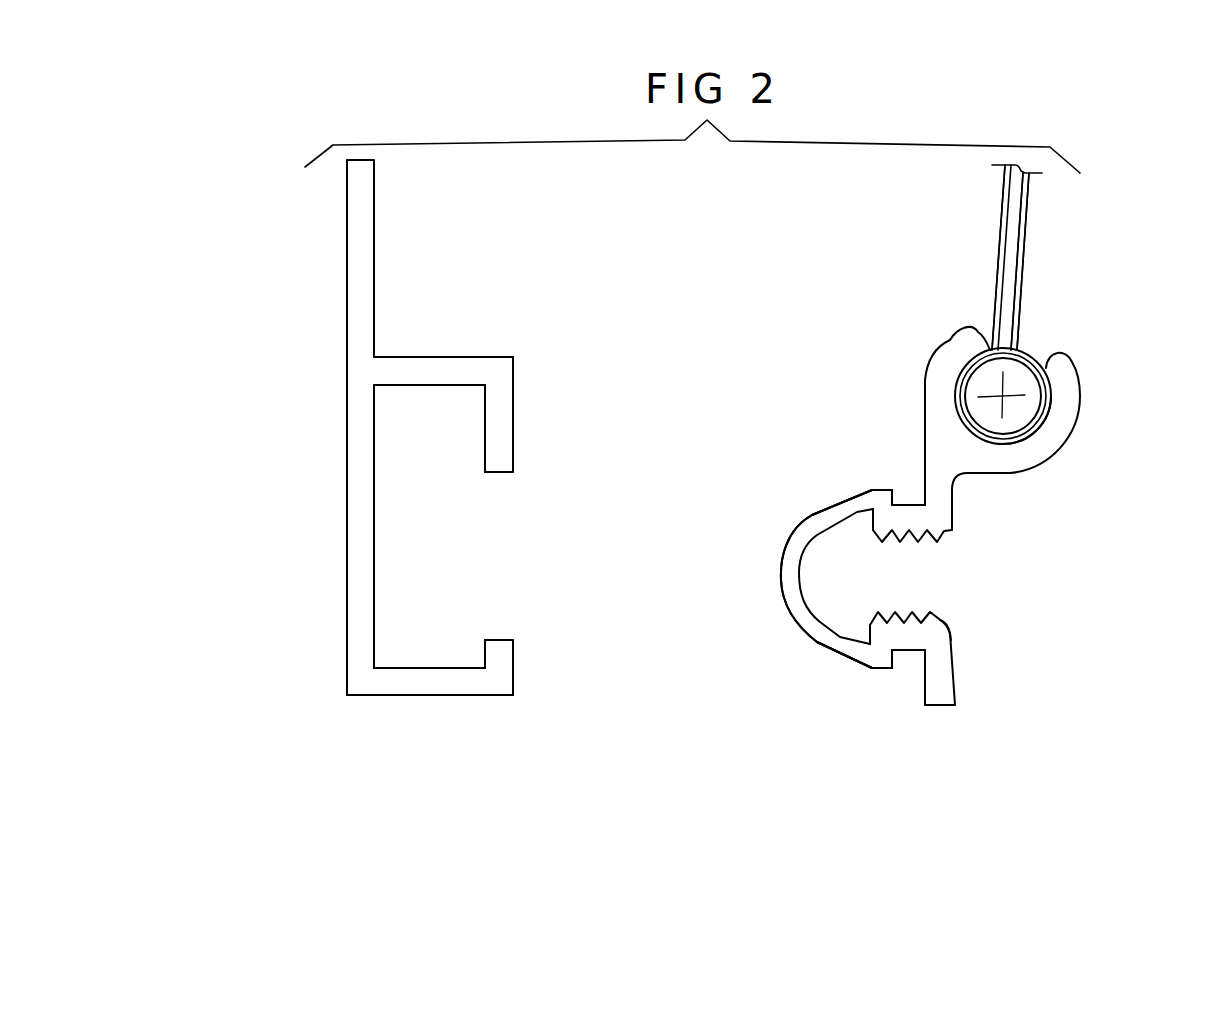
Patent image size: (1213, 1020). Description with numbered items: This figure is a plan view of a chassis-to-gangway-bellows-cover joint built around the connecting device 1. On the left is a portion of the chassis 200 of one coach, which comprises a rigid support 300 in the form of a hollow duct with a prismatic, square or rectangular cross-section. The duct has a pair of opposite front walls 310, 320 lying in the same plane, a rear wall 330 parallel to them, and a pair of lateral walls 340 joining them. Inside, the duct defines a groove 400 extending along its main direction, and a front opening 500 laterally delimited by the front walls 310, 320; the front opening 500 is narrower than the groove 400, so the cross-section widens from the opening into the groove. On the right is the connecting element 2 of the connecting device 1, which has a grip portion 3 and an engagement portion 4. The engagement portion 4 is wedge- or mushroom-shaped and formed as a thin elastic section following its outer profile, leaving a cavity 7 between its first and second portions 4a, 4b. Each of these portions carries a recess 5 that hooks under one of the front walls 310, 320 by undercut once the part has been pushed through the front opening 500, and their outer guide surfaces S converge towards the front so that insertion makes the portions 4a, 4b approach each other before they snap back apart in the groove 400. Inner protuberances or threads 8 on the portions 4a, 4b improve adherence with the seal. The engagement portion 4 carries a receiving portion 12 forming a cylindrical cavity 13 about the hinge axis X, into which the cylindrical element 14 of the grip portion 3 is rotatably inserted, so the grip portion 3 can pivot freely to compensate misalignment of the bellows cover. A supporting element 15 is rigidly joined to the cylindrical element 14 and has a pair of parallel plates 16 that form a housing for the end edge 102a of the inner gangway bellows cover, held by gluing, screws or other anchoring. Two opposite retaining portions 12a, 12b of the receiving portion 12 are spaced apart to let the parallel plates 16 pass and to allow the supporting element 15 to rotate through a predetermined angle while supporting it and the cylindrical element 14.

The connecting device 1 is at (813, 327).
The connecting element 2 is at (903, 420).
The grip portion 3 is at (1040, 278).
The engagement portion 4 is at (809, 650).
The first portion 4a is at (820, 523).
The second portion 4b is at (808, 625).
The recess 5 is at (909, 503).
The cavity 7 is at (845, 586).
The inner protuberances or threads 8 is at (900, 542).
The receiving portion 12 is at (973, 460).
The retaining portion 12a is at (1067, 397).
The retaining portion 12b is at (950, 357).
The cylindrical cavity 13 is at (1028, 405).
The cylindrical element 14 is at (1052, 380).
The supporting element 15 is at (981, 285).
The parallel plates 16 is at (1002, 235).
The end edge 102a is at (1015, 219).
The hinge axis X is at (1007, 390).
The guide surfaces S is at (828, 507).
The portion of the chassis 200 is at (306, 224).
The rigid support 300 is at (335, 368).
The front wall 310 is at (503, 413).
The front wall 320 is at (502, 672).
The rear wall 330 is at (362, 533).
The lateral walls 340 is at (429, 368).
The groove 400 is at (414, 539).
The front opening 500 is at (533, 543).